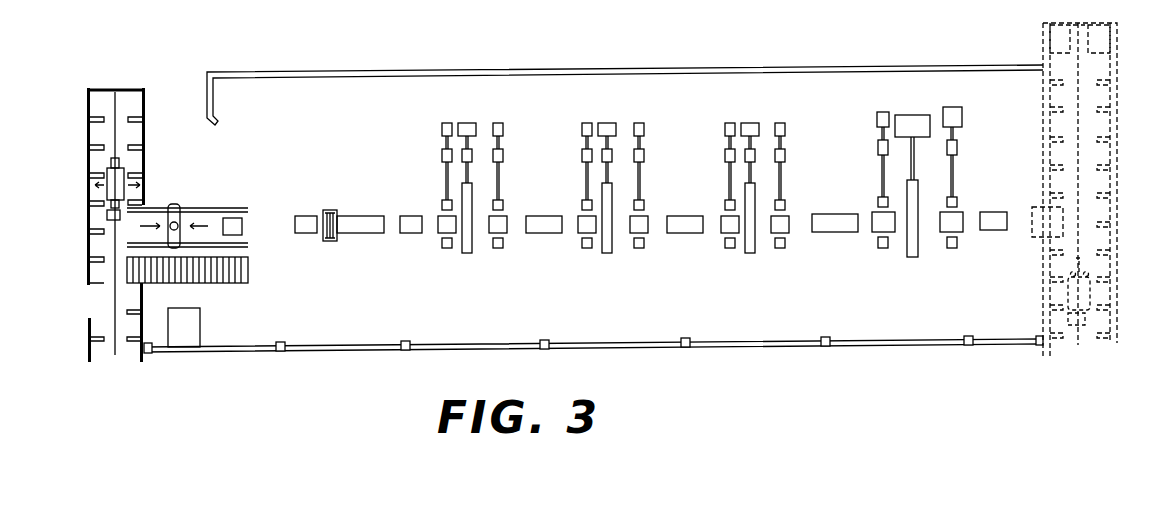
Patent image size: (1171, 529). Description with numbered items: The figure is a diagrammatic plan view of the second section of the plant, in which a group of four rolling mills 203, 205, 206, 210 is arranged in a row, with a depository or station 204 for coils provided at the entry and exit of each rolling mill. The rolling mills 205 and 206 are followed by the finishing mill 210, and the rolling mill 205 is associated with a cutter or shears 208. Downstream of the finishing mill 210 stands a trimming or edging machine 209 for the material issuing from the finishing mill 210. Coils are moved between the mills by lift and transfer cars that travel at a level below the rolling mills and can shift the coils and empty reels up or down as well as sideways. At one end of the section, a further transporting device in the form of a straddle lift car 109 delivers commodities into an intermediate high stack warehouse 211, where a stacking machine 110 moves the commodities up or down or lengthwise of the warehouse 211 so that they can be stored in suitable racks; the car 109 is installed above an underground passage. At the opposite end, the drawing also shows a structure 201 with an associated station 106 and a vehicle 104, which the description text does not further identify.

The storage warehouse structure 201 is at (1100, 70).
The loading station 106 is at (1040, 207).
The transfer vehicle 104 is at (1090, 295).
The intermediate high stack warehouse 211 is at (136, 103).
The stacking machine 110 is at (118, 180).
The straddle lift car 109 is at (176, 207).
The trimming or edging machine 209 is at (334, 210).
The finishing mill 210 is at (474, 240).
The rolling mill 206 is at (614, 240).
The rolling mill 205 is at (780, 208).
The cutter or shears 208 is at (786, 185).
The rolling mill 203 is at (944, 201).
The depository or station for coils 204 is at (958, 224).